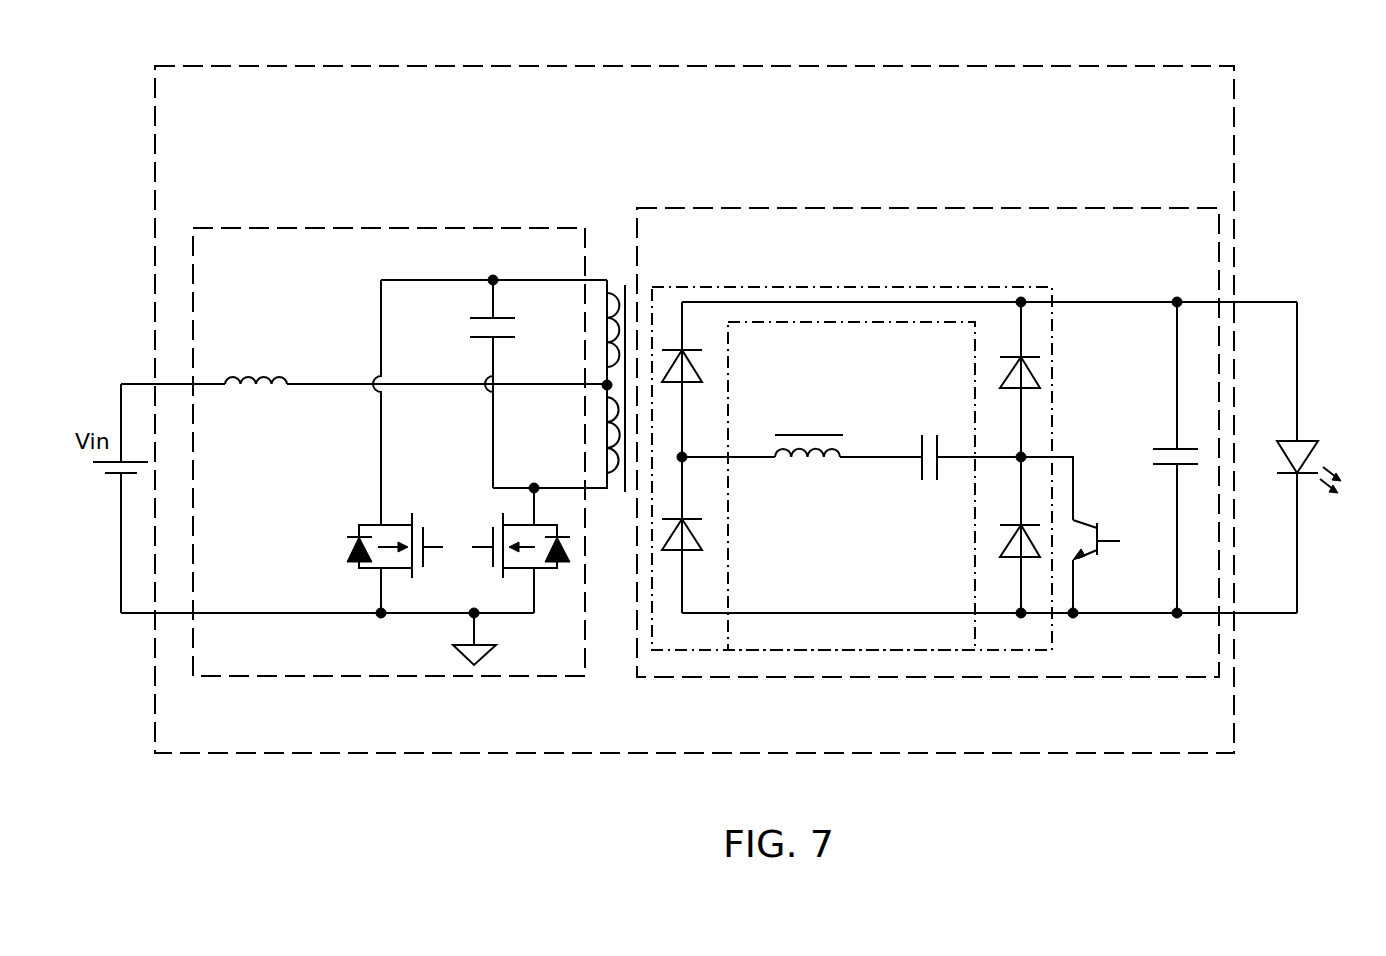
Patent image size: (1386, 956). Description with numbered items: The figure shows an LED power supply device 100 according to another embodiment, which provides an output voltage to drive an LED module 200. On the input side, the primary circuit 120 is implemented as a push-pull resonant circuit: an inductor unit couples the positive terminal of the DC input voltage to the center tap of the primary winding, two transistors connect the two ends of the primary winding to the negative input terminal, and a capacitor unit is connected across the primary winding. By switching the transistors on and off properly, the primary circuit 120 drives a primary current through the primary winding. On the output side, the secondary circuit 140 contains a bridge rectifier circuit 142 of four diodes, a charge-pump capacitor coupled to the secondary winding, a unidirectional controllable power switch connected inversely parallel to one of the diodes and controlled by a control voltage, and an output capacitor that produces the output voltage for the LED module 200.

The LED power supply device 100 is at (323, 753).
The primary circuit 120 is at (430, 228).
The secondary circuit 140 is at (870, 208).
The bridge rectifier circuit 142 is at (793, 287).
The LED module 200 is at (1298, 440).